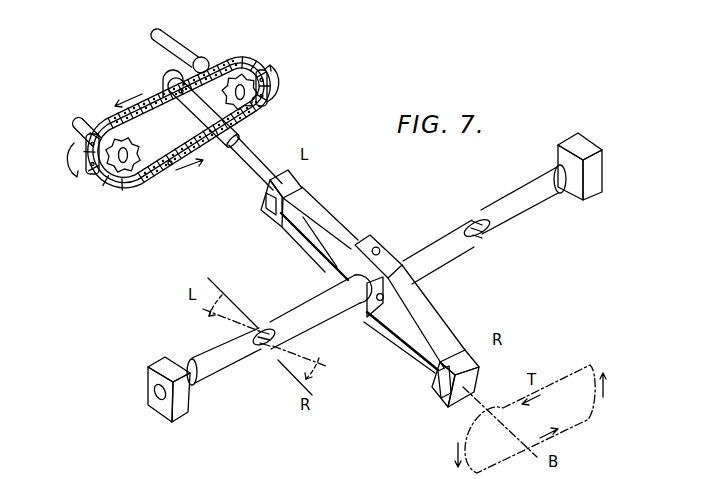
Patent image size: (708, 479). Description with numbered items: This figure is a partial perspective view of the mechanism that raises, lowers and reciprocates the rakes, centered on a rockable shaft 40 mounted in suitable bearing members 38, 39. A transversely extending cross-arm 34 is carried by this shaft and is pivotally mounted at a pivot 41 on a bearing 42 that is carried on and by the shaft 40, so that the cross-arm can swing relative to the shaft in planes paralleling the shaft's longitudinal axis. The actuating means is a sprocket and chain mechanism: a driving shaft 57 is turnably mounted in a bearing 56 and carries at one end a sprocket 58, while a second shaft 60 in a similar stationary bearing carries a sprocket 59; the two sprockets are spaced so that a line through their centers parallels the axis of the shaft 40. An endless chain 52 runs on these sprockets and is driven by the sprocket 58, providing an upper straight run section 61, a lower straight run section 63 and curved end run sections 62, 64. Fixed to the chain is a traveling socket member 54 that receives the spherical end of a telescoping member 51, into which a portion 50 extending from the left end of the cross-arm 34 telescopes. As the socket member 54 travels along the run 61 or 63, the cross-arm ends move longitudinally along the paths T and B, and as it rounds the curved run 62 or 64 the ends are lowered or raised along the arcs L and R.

The cross-arm 34 is at (338, 210).
The bearing member 38 is at (148, 377).
The bearing member 39 is at (587, 197).
The rockable shaft 40 is at (302, 302).
The pivot 41 is at (381, 247).
The bearing 42 is at (367, 304).
The portion 50 is at (257, 152).
The telescoping member 51 is at (226, 145).
The endless chain 52 is at (150, 97).
The traveling socket member 54 is at (167, 77).
The bearing 56 is at (204, 58).
The driving shaft 57 is at (183, 46).
The sprocket 58 is at (241, 108).
The sprocket 59 is at (123, 162).
The shaft 60 is at (77, 140).
The upper straight run section 61 is at (181, 94).
The curved end run section 62 is at (95, 174).
The lower straight run section 63 is at (170, 166).
The curved end run section 64 is at (265, 98).